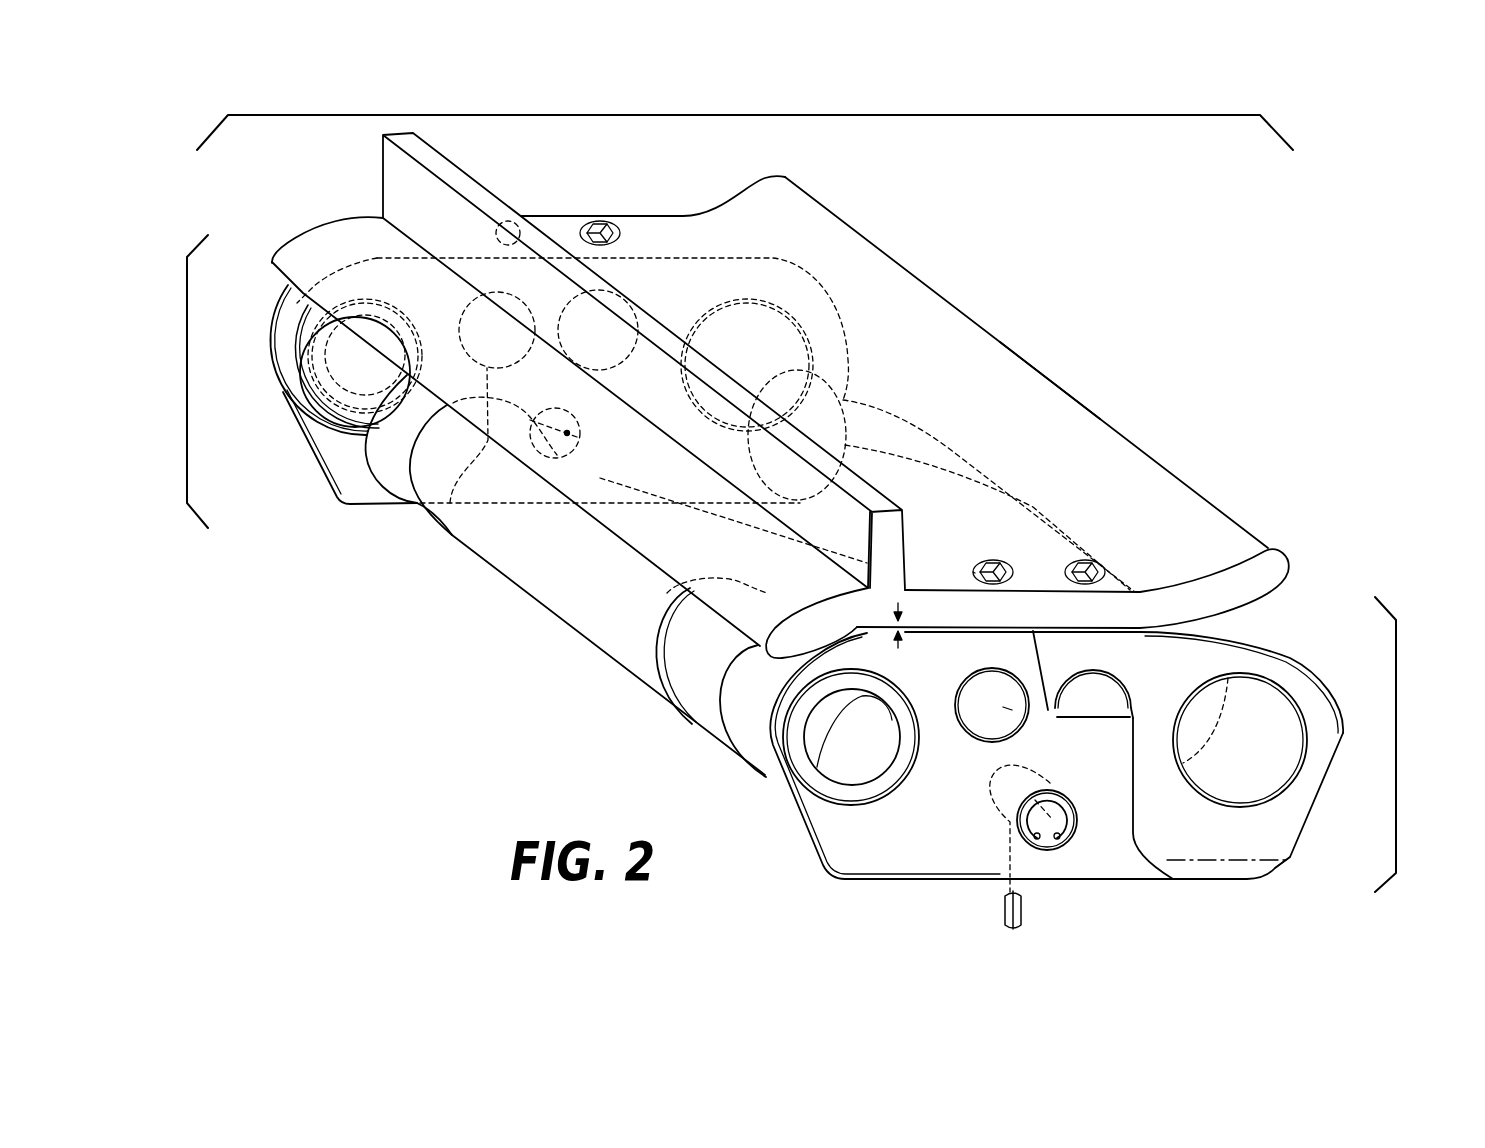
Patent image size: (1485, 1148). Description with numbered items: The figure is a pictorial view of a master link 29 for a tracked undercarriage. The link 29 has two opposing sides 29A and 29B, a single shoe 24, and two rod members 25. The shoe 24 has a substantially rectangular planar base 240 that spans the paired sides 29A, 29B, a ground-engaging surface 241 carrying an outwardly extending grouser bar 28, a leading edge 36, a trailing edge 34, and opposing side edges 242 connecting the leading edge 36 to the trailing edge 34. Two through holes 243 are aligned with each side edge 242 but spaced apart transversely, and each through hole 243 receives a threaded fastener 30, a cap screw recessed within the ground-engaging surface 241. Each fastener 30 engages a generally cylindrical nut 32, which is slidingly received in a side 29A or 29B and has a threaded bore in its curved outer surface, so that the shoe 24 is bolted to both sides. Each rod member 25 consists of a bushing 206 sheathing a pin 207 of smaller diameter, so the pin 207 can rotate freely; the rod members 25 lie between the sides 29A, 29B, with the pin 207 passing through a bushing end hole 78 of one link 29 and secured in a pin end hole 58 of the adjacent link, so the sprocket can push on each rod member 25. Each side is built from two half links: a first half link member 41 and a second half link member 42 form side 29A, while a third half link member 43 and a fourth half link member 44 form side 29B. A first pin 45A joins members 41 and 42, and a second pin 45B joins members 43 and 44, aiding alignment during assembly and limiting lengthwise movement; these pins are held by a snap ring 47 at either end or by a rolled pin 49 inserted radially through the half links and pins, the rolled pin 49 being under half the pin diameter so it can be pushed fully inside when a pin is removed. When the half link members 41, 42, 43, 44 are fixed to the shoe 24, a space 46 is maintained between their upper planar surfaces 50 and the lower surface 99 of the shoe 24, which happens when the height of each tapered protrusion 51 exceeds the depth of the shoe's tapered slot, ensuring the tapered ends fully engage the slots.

The shoe 24 is at (1003, 209).
The rod member 25 is at (1014, 485).
The grouser bar 28 is at (383, 178).
The link 29 is at (598, 114).
The first side 29A is at (187, 368).
The second side 29B is at (1400, 722).
The threaded fastener 30 is at (512, 222).
The nut 32 is at (1075, 697).
The trailing edge 34 is at (280, 265).
The leading edge 36 is at (975, 335).
The first half link member 41 is at (342, 495).
The second half link member 42 is at (848, 352).
The third half link member 43 is at (835, 862).
The fourth half link member 44 is at (1290, 862).
The first pin 45A is at (577, 437).
The second pin 45B is at (1045, 845).
The space 46 is at (917, 632).
The snap ring 47 is at (1075, 830).
The rolled pin 49 is at (1002, 910).
The upper planar surface 50 is at (975, 628).
The tapered protrusion 51 is at (1090, 626).
The pin end hole 58 is at (330, 375).
The bushing end hole 78 is at (775, 316).
The lower surface 99 is at (1210, 620).
The bushing 206 is at (597, 618).
The pin 207 is at (700, 707).
The planar base 240 is at (1033, 395).
The ground-engaging surface 241 is at (720, 230).
The side edge 242 is at (663, 213).
The through hole 243 is at (976, 565).